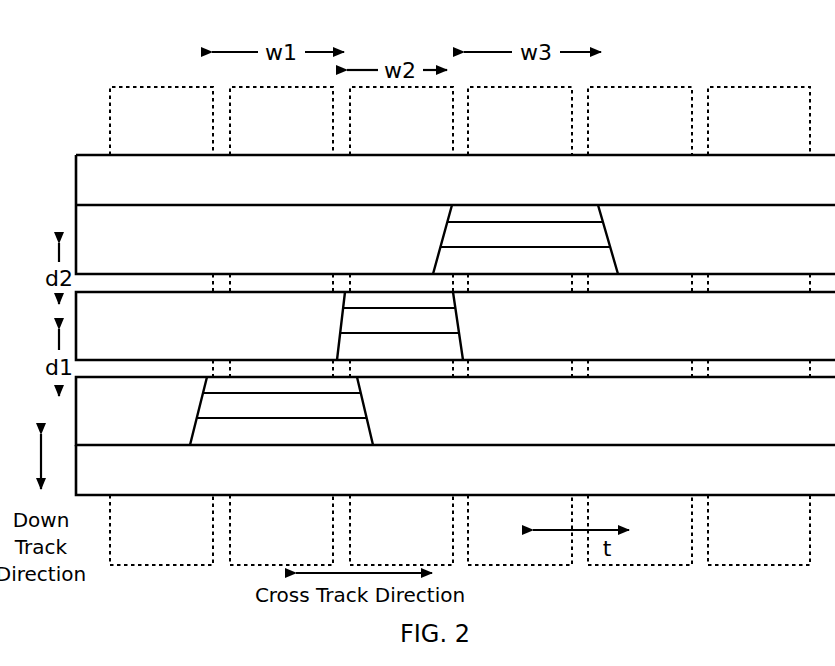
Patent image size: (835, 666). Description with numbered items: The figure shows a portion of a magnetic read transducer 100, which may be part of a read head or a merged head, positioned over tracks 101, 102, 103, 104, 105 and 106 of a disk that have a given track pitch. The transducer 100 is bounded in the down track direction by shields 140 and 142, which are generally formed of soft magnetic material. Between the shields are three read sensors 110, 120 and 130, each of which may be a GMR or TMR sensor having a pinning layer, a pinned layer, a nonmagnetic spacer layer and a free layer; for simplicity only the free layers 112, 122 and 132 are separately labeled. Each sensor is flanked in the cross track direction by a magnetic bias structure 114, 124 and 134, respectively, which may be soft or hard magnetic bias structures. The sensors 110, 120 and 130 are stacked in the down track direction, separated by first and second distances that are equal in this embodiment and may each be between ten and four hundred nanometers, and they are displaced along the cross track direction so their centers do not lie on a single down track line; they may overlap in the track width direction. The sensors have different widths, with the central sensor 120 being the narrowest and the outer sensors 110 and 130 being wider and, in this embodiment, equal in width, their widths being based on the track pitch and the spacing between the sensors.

The magnetic read transducer 100 is at (413, 31).
The track 101 is at (161, 326).
The track 102 is at (281, 326).
The track 103 is at (401, 326).
The track 104 is at (520, 326).
The track 105 is at (640, 326).
The track 106 is at (759, 326).
The read sensor 110 is at (455, 484).
The free layer 112 is at (281, 411).
The magnetic bias structure 114 is at (455, 411).
The read sensor 120 is at (455, 442).
The free layer 122 is at (400, 326).
The magnetic bias structure 124 is at (455, 326).
The read sensor 130 is at (455, 157).
The free layer 132 is at (525, 239).
The magnetic bias structure 134 is at (455, 239).
The shield 140 is at (455, 470).
The shield 142 is at (455, 180).